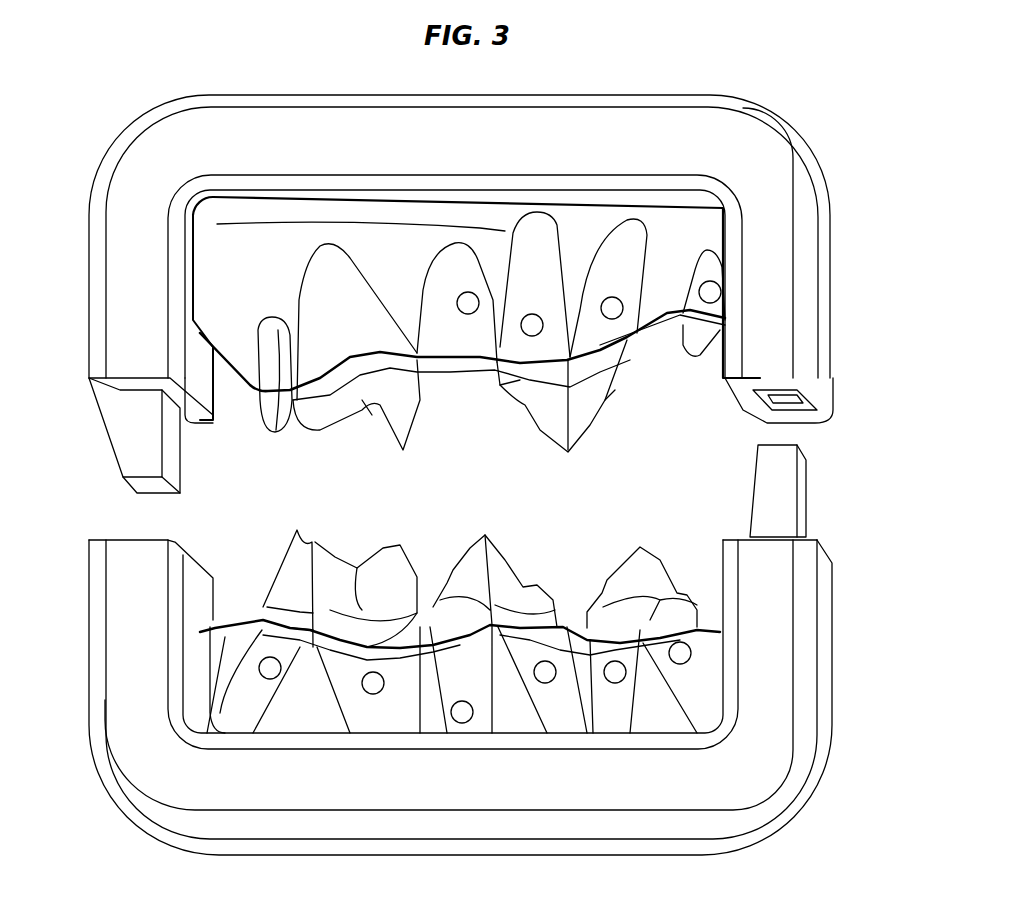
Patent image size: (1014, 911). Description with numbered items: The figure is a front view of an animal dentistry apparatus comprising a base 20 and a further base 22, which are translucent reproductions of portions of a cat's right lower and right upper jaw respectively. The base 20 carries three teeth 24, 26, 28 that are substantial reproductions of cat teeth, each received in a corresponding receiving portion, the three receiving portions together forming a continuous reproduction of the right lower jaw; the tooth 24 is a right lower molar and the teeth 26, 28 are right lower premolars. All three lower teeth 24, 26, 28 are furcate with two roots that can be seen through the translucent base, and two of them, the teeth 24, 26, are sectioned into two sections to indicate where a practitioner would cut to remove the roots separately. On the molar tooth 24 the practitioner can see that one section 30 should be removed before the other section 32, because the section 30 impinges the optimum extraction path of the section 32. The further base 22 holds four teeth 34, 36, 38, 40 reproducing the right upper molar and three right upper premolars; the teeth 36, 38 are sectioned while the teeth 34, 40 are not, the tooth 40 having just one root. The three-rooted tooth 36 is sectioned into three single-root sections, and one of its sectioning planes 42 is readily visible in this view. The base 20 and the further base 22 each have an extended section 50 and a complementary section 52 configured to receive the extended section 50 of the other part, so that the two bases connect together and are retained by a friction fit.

The base 20 is at (780, 712).
The further base 22 is at (705, 130).
The tooth 24 is at (267, 537).
The tooth 26 is at (427, 537).
The tooth 28 is at (580, 545).
The section 30 is at (382, 612).
The section 32 is at (285, 590).
The tooth 34 is at (267, 412).
The tooth 36 is at (287, 447).
The tooth 38 is at (505, 447).
The tooth 40 is at (703, 353).
The sectioning plane 42 is at (418, 397).
The extended section 50 is at (137, 445).
The complementary section 52 is at (797, 403).